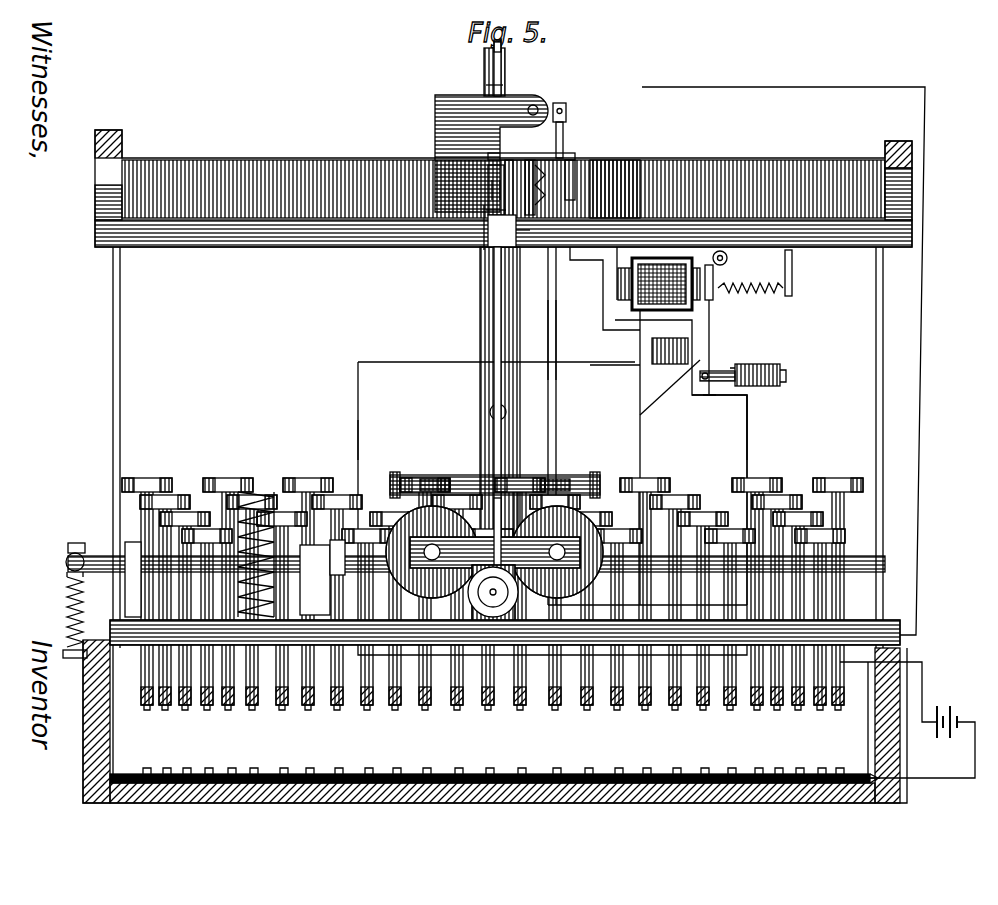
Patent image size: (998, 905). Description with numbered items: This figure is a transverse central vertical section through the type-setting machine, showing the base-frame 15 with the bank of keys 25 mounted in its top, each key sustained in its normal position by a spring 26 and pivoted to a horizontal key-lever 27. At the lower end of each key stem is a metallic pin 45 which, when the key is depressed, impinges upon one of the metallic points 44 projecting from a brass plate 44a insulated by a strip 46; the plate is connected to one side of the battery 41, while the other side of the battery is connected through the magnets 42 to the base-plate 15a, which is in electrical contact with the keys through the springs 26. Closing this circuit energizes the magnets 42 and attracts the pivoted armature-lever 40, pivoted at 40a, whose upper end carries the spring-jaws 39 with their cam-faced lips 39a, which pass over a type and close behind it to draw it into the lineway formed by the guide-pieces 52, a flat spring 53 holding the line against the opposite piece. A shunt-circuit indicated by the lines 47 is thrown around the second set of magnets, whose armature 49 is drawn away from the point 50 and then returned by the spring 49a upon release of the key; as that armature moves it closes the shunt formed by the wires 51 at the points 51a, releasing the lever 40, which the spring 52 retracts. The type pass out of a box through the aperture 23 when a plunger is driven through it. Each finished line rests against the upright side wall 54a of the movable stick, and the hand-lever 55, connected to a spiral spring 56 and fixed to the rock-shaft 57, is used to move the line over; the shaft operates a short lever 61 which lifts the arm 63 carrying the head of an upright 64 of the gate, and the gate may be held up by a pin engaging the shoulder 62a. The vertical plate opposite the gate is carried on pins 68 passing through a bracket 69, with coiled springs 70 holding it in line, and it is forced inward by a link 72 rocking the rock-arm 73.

The base-frame 15 is at (110, 726).
The base-plate 15a is at (505, 632).
The aperture 23 is at (659, 284).
The keys 25 is at (232, 476).
The spring 26 is at (280, 500).
The horizontal levers 27 is at (492, 613).
The spring-jaws 39 is at (484, 220).
The lips 39a is at (512, 160).
The pivoted lever 40 is at (490, 320).
The pivot 40a is at (405, 474).
The battery 41 is at (953, 714).
The magnets 42 is at (494, 548).
The metallic points 44 is at (732, 772).
The brass plate 44a is at (812, 773).
The metallic pin 45 is at (586, 712).
The insulating strip 46 is at (716, 768).
The shunt-circuit lines 47 is at (686, 388).
The armature 49 is at (714, 318).
The spring 49a is at (745, 285).
The point 50 is at (716, 368).
The wires 51 is at (668, 366).
The points 51a is at (735, 350).
The guide-pieces 52 is at (458, 414).
The flat spring 53 is at (484, 212).
The upright side wall 54a is at (790, 168).
The hand-lever 55 is at (66, 552).
The spiral spring 56 is at (66, 604).
The rock-shaft 57 is at (488, 182).
The short lever 61 is at (502, 75).
The shoulder 62a is at (493, 50).
The arm 63 is at (504, 90).
The upright 64 is at (482, 80).
The pins 68 is at (598, 162).
The bracket 69 is at (560, 158).
The coiled springs 70 is at (534, 231).
The link 72 is at (558, 343).
The rock-arm 73 is at (545, 110).